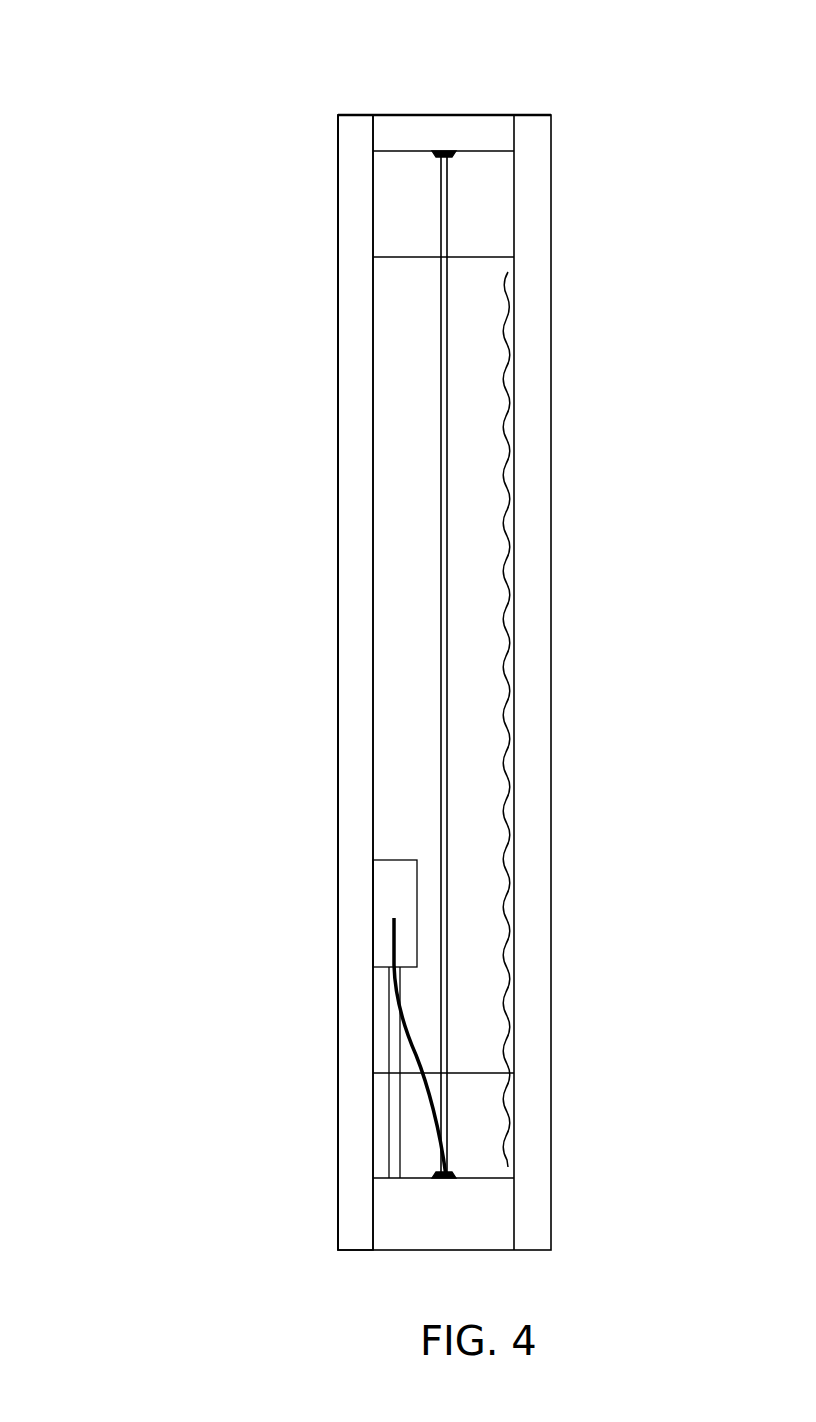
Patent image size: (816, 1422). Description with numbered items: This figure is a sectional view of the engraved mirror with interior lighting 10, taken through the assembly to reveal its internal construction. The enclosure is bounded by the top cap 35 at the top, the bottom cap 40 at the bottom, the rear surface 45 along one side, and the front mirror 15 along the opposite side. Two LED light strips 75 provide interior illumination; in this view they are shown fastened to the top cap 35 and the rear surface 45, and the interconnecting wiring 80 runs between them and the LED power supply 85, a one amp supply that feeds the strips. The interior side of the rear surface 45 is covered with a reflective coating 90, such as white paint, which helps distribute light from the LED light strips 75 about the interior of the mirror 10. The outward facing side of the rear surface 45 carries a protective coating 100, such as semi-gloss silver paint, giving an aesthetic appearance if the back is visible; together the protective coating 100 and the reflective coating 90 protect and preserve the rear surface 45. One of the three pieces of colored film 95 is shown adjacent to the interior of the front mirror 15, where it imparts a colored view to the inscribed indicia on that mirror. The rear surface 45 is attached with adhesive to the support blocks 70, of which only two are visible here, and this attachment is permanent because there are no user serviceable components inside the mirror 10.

The engraved mirror with interior lighting 10 is at (128, 190).
The front mirror 15 is at (532, 967).
The top cap 35 is at (427, 133).
The bottom cap 40 is at (398, 1232).
The rear surface 45 is at (355, 672).
The support block 70 is at (470, 220).
The LED light strip 75 is at (456, 152).
The interconnecting wiring 80 is at (449, 165).
The LED power supply 85 is at (384, 890).
The reflective coating 90 is at (375, 362).
The colored film 95 is at (505, 824).
The protective coating 100 is at (337, 510).